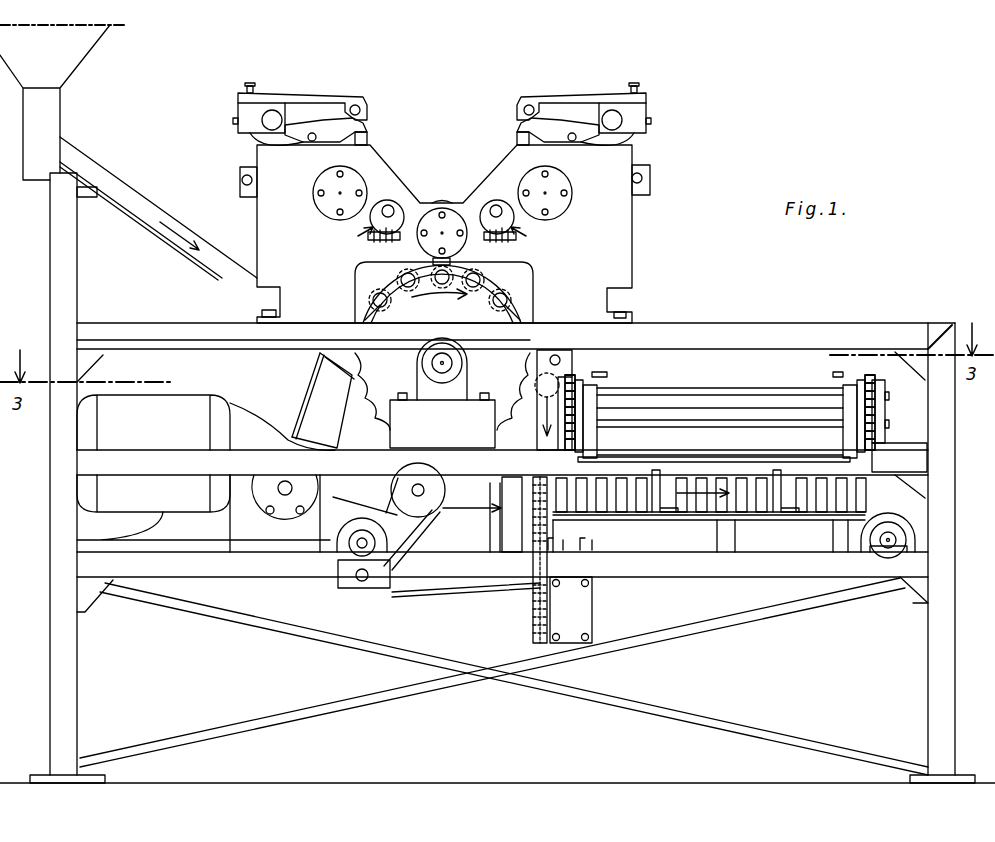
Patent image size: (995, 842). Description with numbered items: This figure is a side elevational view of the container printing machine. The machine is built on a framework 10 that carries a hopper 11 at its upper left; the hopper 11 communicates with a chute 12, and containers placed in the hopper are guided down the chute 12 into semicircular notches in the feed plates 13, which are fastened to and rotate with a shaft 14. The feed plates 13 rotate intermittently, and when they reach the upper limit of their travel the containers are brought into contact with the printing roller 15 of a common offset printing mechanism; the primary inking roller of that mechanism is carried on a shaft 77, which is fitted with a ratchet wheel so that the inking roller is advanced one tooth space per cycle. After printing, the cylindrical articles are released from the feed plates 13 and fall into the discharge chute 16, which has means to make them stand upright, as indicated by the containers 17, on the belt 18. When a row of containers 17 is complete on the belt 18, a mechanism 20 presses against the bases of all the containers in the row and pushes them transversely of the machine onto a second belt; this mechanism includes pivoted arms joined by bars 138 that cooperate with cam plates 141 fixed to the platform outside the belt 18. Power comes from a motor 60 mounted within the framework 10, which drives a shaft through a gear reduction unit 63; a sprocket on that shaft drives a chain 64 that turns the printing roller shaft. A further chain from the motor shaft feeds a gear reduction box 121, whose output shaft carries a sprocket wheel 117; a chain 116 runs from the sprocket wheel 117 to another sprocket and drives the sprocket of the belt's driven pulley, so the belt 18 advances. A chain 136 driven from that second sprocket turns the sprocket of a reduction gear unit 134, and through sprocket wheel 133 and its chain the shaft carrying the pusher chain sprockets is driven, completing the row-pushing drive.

The framework 10 is at (55, 457).
The hopper 11 is at (78, 52).
The chute 12 is at (127, 192).
The feed plates 13 is at (370, 378).
The shaft 14 is at (450, 364).
The printing roller 15 is at (462, 255).
The discharge chute 16 is at (565, 378).
The containers 17 is at (410, 290).
The belt 18 is at (455, 516).
The pushing mechanism 20 is at (697, 388).
The motor 60 is at (200, 413).
The gear reduction unit 63 is at (267, 530).
The chain 64 is at (316, 393).
The shaft of the primary inking roller 77 is at (243, 182).
The chain 116 is at (420, 535).
The sprocket wheel 117 is at (440, 490).
The gear reduction box 121 is at (475, 527).
The sprocket wheel 133 is at (533, 612).
The reduction gear unit 134 is at (582, 622).
The chain 136 is at (440, 590).
The bars 138 is at (748, 457).
The cam plates 141 is at (654, 473).